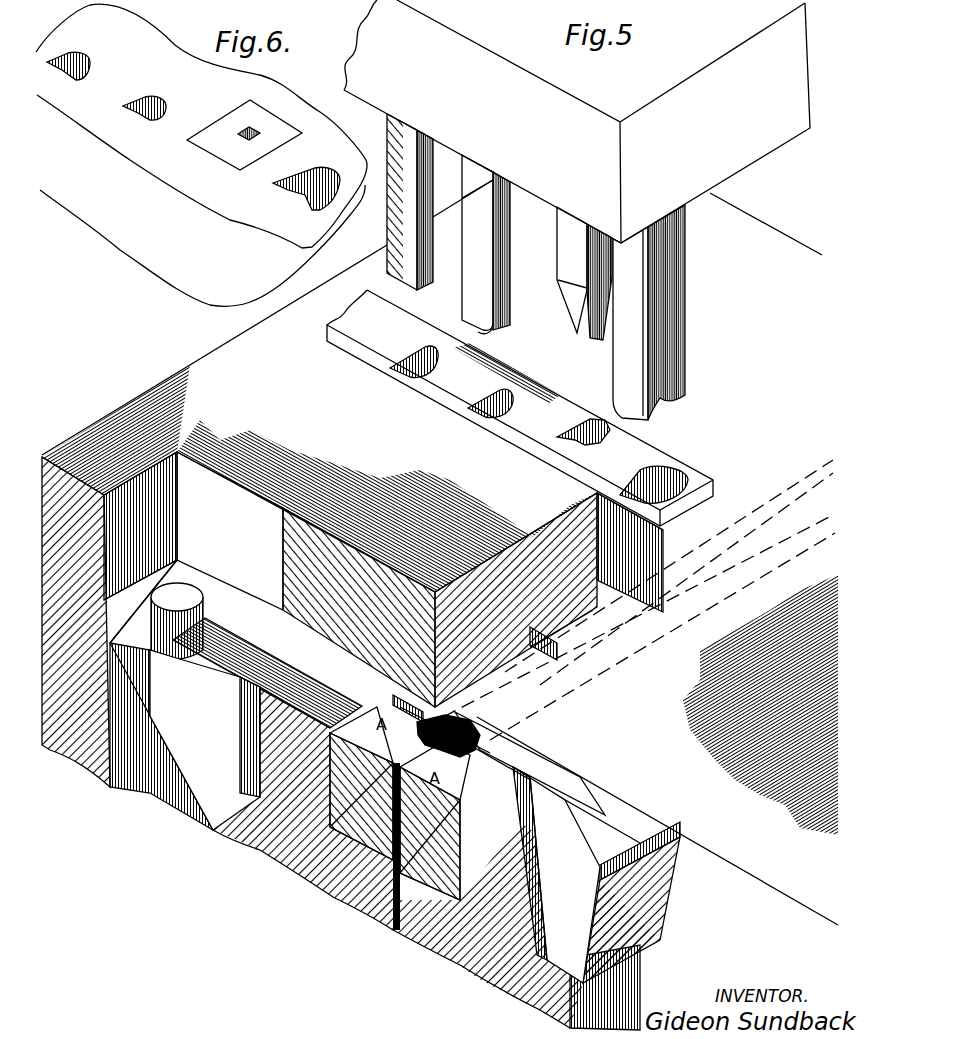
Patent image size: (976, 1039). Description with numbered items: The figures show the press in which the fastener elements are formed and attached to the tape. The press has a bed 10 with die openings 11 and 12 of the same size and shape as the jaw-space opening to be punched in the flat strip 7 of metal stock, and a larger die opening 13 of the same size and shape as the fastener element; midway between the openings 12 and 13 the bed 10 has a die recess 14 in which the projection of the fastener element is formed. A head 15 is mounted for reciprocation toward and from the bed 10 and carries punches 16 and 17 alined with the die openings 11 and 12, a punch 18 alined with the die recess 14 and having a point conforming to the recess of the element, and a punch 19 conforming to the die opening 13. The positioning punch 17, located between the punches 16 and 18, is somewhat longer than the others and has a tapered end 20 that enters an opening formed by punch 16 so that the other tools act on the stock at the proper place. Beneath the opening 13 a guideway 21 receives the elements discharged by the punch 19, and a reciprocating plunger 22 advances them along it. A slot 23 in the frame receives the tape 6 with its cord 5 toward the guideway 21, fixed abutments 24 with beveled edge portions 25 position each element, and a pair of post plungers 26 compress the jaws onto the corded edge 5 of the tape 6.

In FIG. 6, the bed 10 is at (182, 262).
In FIG. 5, the bed 10 is at (780, 253).
In FIG. 6, the die opening 11 is at (90, 61).
In FIG. 6, the die opening 12 is at (168, 101).
In FIG. 6, the die opening 13 is at (325, 170).
In FIG. 6, the die recess 14 is at (252, 130).
In FIG. 5, the head 15 is at (384, 8).
In FIG. 5, the punch 16 is at (392, 225).
In FIG. 5, the positioning punch 17 is at (475, 293).
In FIG. 5, the punch 18 is at (570, 258).
In FIG. 5, the punch 19 is at (632, 377).
In FIG. 5, the tapered end 20 is at (493, 333).
In FIG. 5, the flat strip 7 is at (372, 350).
In FIG. 5, the guideway 21 is at (607, 640).
In FIG. 5, the reciprocating plunger 22 is at (493, 712).
In FIG. 5, the slot 23 is at (398, 933).
In FIG. 5, the fixed abutments 24 is at (318, 865).
In FIG. 5, the beveled edge portions 25 is at (427, 733).
In FIG. 5, the post plungers 26 is at (383, 688).
In FIG. 5, the cord 5 is at (460, 718).
In FIG. 5, the tape 6 is at (393, 903).